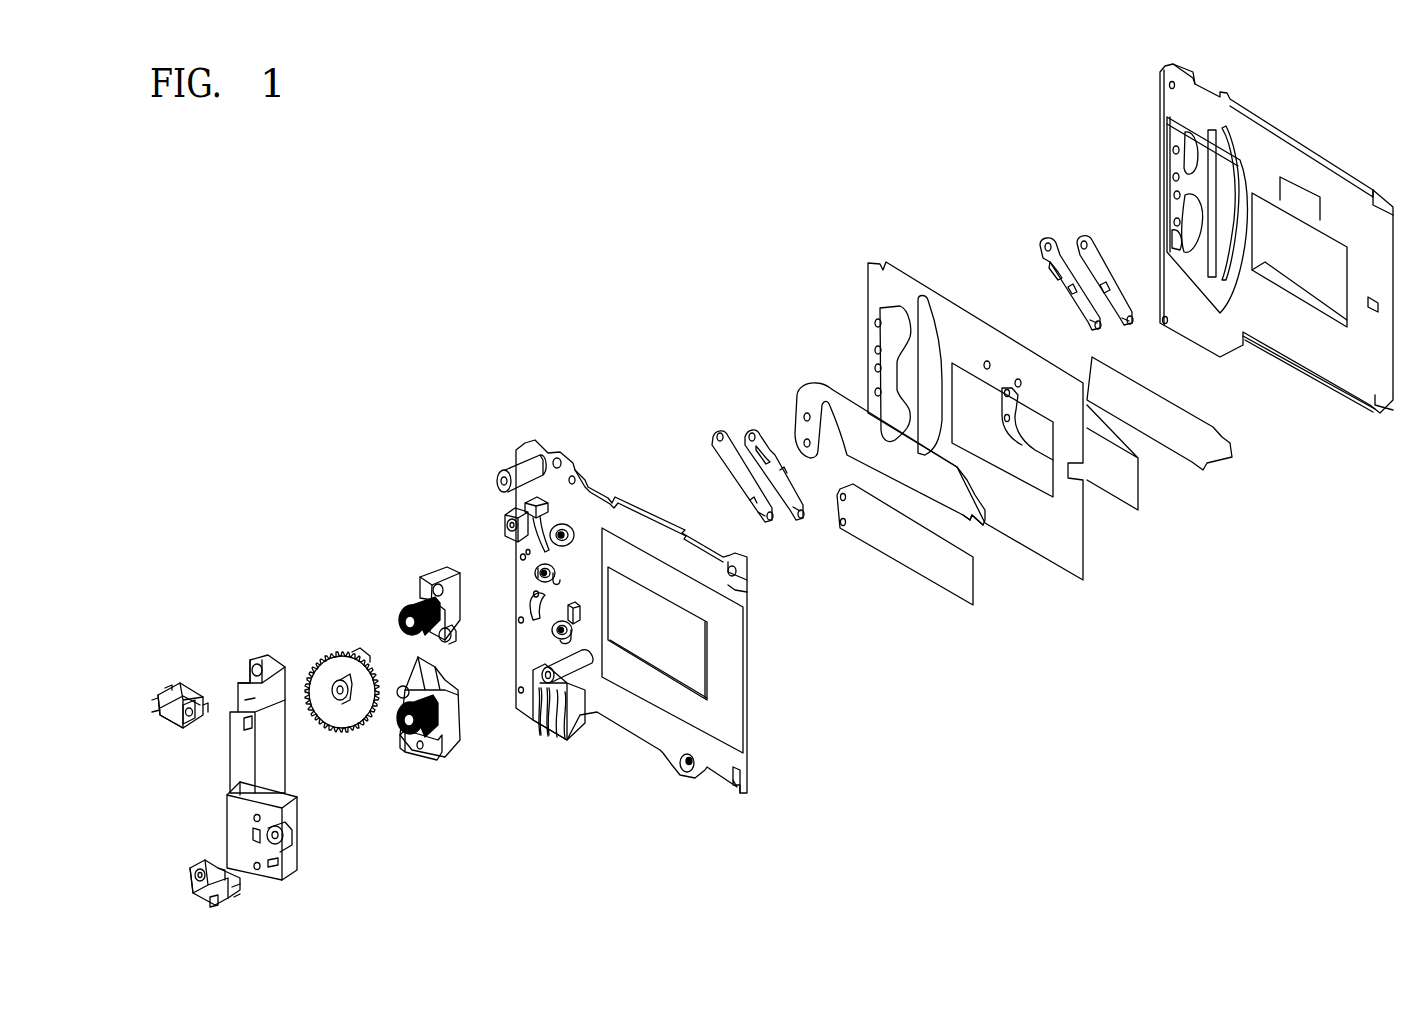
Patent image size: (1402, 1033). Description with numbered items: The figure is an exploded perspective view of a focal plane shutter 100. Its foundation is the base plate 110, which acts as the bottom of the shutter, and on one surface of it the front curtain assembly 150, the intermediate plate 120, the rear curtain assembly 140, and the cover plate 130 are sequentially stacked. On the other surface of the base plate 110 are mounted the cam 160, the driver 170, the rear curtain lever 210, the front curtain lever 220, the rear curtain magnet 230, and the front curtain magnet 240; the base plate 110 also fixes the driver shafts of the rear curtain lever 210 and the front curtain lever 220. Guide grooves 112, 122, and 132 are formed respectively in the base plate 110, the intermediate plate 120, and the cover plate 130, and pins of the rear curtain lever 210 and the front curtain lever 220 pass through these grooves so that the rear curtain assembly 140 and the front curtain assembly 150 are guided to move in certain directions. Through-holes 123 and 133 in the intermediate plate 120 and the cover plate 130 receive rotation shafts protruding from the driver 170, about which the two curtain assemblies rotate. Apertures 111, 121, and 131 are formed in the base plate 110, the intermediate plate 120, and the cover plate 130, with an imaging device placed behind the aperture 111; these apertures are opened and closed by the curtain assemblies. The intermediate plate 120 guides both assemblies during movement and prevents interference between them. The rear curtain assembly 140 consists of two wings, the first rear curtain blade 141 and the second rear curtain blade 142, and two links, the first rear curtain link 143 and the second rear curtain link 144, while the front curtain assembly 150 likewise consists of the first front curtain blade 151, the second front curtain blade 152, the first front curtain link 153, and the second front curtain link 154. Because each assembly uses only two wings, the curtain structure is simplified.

The focal plane shutter 100 is at (628, 262).
The base plate 110 is at (521, 498).
The aperture 111 is at (655, 633).
The guide groove 112 is at (513, 540).
The intermediate plate 120 is at (878, 258).
The aperture 121 is at (1020, 460).
The guide groove 122 is at (900, 317).
The through-hole 123 is at (887, 338).
The cover plate 130 is at (1338, 378).
The aperture 131 is at (1303, 263).
The guide groove 132 is at (1180, 140).
The through-hole 133 is at (1177, 175).
The rear curtain assembly 140 is at (1220, 477).
The first rear curtain blade 141 is at (1193, 452).
The second rear curtain blade 142 is at (1122, 488).
The first rear curtain link 143 is at (1047, 243).
The second rear curtain link 144 is at (1080, 240).
The front curtain assembly 150 is at (804, 370).
The first front curtain blade 151 is at (915, 550).
The second front curtain blade 152 is at (972, 507).
The first front curtain link 153 is at (752, 430).
The second front curtain link 154 is at (720, 433).
The cam 160 is at (321, 640).
The driver 170 is at (236, 656).
The rear curtain lever 210 is at (434, 770).
The front curtain lever 220 is at (400, 568).
The rear curtain magnet 230 is at (176, 858).
The front curtain magnet 240 is at (148, 686).